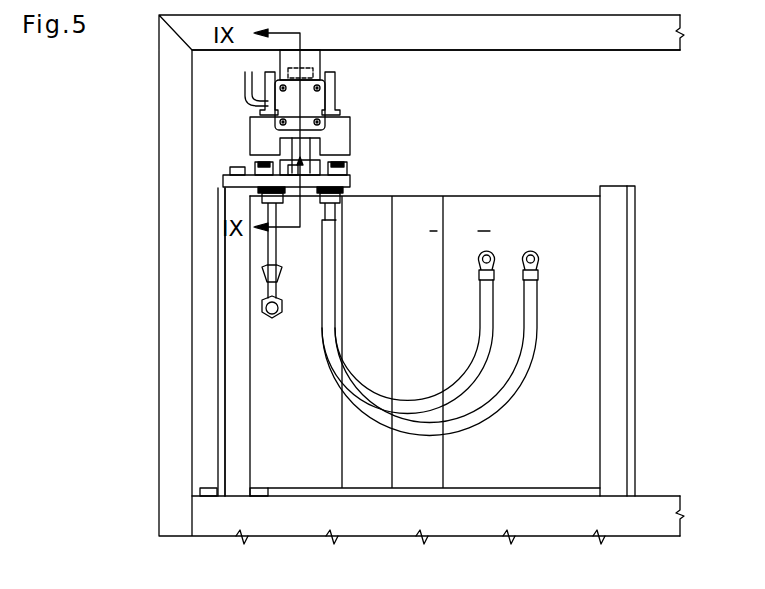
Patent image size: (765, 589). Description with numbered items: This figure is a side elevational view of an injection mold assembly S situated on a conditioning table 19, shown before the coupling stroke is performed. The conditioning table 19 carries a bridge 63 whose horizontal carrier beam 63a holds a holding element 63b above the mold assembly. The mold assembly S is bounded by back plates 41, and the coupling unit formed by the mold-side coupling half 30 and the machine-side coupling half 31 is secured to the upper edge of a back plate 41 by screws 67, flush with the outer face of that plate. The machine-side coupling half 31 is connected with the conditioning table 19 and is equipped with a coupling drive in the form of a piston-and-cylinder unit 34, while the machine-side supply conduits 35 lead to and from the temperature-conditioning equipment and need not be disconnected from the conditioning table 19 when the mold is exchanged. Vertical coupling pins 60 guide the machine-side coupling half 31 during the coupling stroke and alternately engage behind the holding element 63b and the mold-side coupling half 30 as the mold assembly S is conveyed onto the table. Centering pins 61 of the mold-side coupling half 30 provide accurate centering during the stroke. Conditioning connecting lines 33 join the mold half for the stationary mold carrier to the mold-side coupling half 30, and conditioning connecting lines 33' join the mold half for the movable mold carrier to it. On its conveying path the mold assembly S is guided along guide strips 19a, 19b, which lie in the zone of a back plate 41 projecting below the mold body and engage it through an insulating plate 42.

The conditioning table 19 is at (440, 515).
The guide strip 19a is at (258, 490).
The guide strip 19b is at (200, 490).
The mold-side coupling half 30 is at (221, 180).
The machine-side coupling half 31 is at (246, 135).
The conditioning connecting lines 33 is at (186, 252).
The conditioning connecting lines 33' is at (453, 311).
The piston-and-cylinder unit 34 is at (302, 95).
The machine-side supply conduits 35 is at (330, 82).
The back plate 41 is at (235, 325).
The insulating plate 42 is at (222, 378).
The coupling pins 60 is at (314, 146).
The centering pins 61 is at (347, 173).
The bridge 63 is at (155, 220).
The horizontal carrier beam 63a is at (575, 30).
The holding element 63b is at (310, 58).
The screws 67 is at (230, 169).
The injection mold assembly S is at (529, 193).